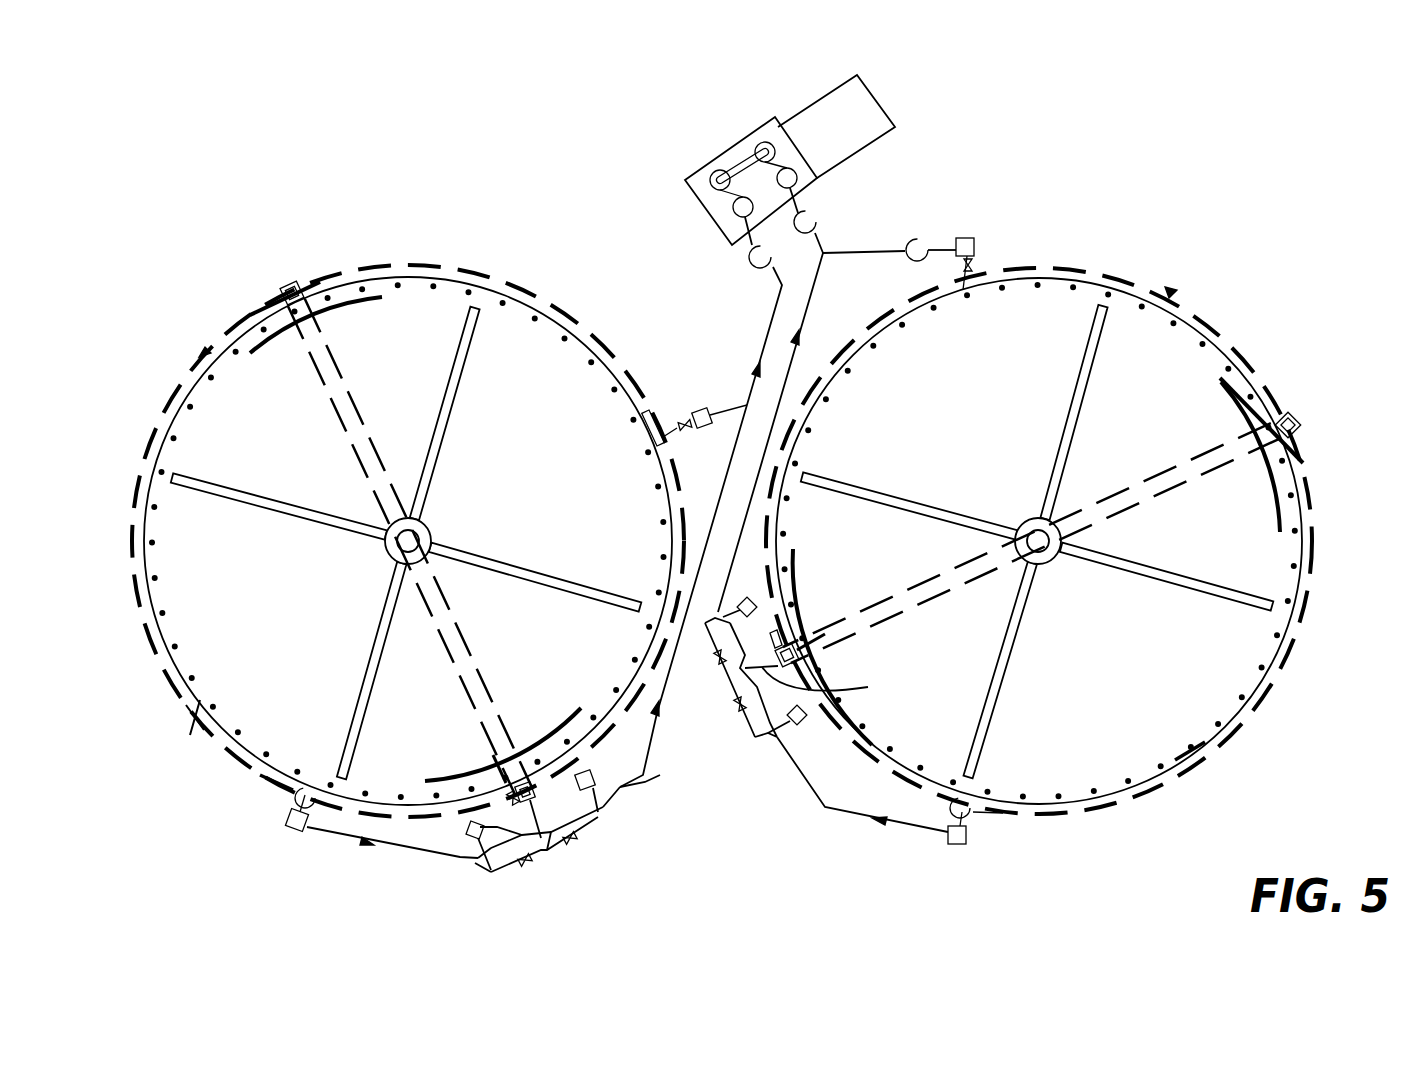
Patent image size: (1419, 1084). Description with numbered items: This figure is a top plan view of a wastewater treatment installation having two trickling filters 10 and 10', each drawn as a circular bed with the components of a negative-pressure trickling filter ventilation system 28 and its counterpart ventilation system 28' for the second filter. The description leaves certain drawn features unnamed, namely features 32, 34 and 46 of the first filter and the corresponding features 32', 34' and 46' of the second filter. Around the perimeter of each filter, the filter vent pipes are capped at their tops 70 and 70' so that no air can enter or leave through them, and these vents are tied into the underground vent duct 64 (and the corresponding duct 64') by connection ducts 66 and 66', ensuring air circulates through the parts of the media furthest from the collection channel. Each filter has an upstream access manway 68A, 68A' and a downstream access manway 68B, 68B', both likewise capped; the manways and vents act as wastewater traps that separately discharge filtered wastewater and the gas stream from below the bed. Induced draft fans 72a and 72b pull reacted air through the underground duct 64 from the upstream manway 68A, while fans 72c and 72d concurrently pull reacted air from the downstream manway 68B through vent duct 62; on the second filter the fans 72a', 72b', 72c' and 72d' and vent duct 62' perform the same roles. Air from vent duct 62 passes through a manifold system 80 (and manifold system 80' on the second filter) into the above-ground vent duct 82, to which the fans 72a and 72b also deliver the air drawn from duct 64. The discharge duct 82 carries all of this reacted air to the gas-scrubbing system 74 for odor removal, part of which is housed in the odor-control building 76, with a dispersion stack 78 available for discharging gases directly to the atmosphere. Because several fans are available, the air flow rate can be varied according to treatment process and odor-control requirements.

The trickling filter 10 is at (1039, 541).
The trickling filter 10' is at (408, 541).
The trickling filter ventilation system 28 is at (852, 819).
The trickling filter ventilation system 28' is at (392, 871).
The rotary distributor hub 32 is at (1004, 510).
The rotary distributor hub 32' is at (456, 520).
The collection trough 34 is at (1081, 563).
The collection trough 34' is at (415, 497).
The distributor arm 46 is at (1037, 542).
The distributor arm 46' is at (406, 543).
The vent duct 62 is at (842, 684).
The vent duct 62' is at (581, 865).
The underground vent duct 64 is at (1052, 541).
The underground vent duct 64' is at (408, 507).
The connection duct 66 is at (1221, 774).
The connection duct 66' is at (217, 747).
The upstream access manway 68A is at (1087, 495).
The upstream access manway 68A' is at (359, 520).
The downstream access manway 68B is at (839, 653).
The downstream access manway 68B' is at (464, 763).
The vent pipe top 70 is at (1039, 541).
The vent pipe top 70' is at (408, 541).
The induced draft fan 72a is at (898, 400).
The induced draft fan 72a' is at (694, 391).
The induced draft fan 72b is at (1009, 837).
The induced draft fan 72b' is at (263, 832).
The induced draft fan 72c is at (781, 570).
The induced draft fan 72c' is at (660, 824).
The induced draft fan 72d is at (823, 750).
The induced draft fan 72d' is at (451, 842).
The gas-scrubbing system 74 is at (752, 135).
The odor-control building 76 is at (817, 100).
The dispersion stack 78 is at (738, 152).
The manifold system 80 is at (723, 690).
The manifold system 80' is at (572, 853).
The above-ground vent duct 82 is at (662, 800).